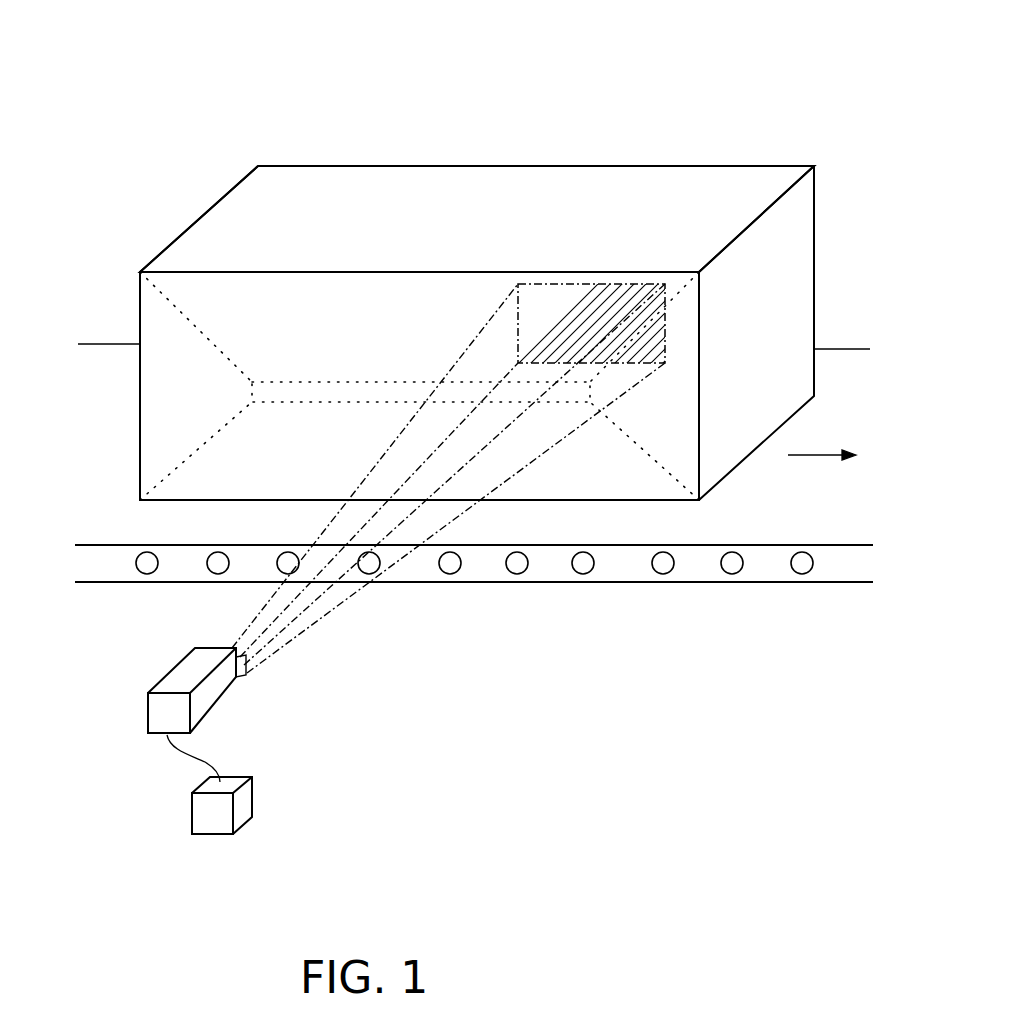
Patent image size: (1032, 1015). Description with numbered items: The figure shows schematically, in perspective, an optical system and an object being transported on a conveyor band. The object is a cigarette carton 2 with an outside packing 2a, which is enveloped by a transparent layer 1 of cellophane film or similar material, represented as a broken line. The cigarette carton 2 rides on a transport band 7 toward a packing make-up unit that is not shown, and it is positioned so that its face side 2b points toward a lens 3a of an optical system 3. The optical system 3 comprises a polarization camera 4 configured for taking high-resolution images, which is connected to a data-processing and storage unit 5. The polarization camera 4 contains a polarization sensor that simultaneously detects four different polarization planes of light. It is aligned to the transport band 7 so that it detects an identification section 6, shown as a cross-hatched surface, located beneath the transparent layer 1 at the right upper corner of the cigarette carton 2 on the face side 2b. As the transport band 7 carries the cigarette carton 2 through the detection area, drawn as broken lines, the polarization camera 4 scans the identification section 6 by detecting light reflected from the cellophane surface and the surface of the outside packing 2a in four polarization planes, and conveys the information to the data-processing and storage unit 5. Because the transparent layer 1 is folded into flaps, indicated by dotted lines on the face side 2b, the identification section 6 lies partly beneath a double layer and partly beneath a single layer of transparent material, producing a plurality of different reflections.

The transparent layer 1 is at (169, 307).
The cigarette carton 2 is at (764, 123).
The outside packing 2a is at (298, 230).
The face side 2b is at (494, 648).
The optical system 3 is at (345, 667).
The lens 3a is at (178, 626).
The polarization camera 4 is at (205, 706).
The data-processing and storage unit 5 is at (245, 803).
The identification section 6 is at (588, 305).
The transport band 7 is at (782, 510).